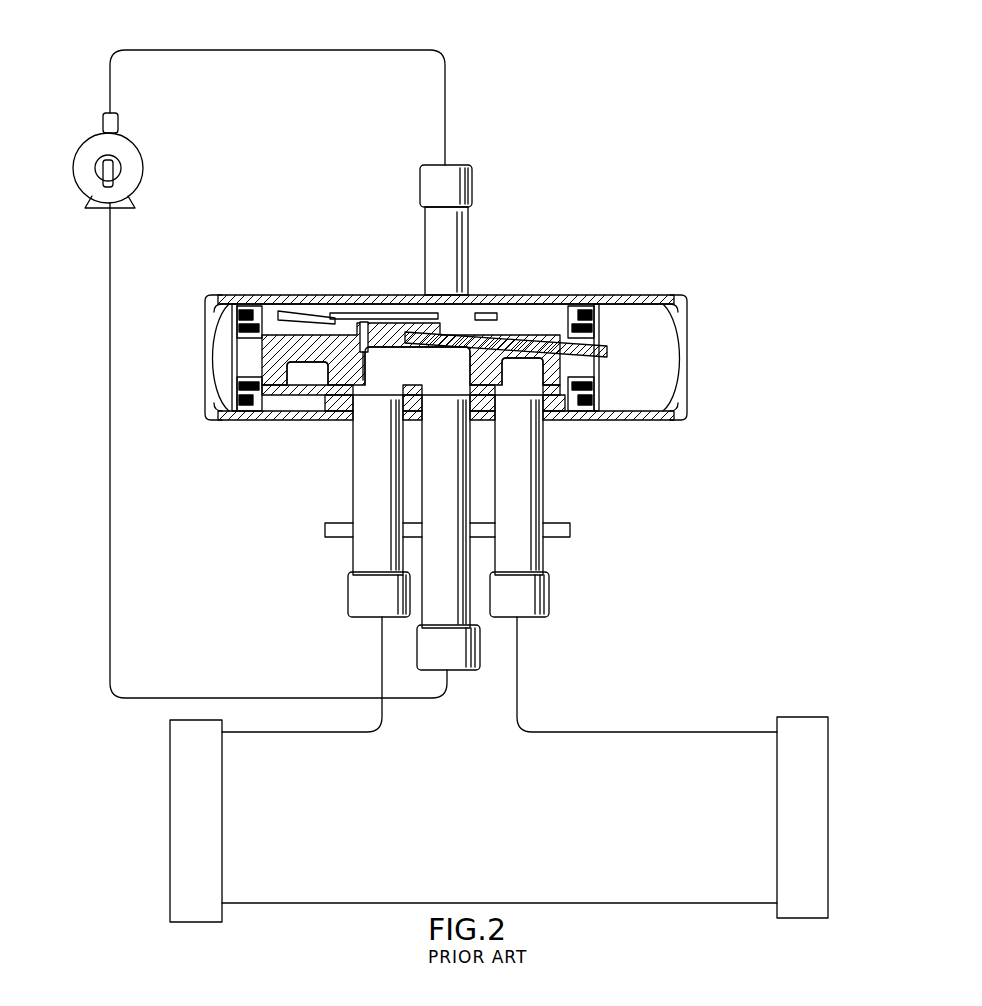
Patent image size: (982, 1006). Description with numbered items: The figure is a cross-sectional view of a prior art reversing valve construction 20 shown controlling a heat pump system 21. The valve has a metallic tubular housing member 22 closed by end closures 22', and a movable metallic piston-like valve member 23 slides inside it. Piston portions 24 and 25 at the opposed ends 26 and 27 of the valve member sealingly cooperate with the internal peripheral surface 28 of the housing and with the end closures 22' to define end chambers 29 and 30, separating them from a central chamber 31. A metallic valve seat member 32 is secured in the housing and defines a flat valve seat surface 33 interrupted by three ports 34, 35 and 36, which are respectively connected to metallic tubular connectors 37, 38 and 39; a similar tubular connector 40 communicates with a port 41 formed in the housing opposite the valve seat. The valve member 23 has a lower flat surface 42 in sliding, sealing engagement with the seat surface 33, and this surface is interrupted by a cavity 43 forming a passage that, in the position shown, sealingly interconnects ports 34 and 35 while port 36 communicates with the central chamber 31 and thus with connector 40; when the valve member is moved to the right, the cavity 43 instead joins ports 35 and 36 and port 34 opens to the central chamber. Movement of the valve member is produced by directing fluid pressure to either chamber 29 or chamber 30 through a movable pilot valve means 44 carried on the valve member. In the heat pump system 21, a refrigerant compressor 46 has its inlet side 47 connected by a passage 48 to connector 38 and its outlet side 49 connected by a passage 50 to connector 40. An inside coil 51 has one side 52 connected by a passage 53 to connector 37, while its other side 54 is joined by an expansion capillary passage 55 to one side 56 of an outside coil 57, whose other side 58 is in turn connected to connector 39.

The reversing valve construction 20 is at (690, 306).
The heat pump system 21 is at (559, 176).
The tubular housing member 22 is at (453, 385).
The end closures 22' is at (464, 357).
The valve member 23 is at (540, 330).
The piston portion 24 is at (242, 305).
The piston portion 25 is at (590, 320).
The end of valve member 26 is at (227, 356).
The end of valve member 27 is at (607, 349).
The internal peripheral surface 28 is at (625, 410).
The end chamber 29 is at (226, 388).
The end chamber 30 is at (648, 383).
The central chamber 31 is at (523, 316).
The valve seat member 32 is at (336, 392).
The valve seat surface 33 is at (417, 366).
The port 34 is at (352, 405).
The port 35 is at (462, 402).
The port 36 is at (512, 396).
The tubular connector 37 is at (350, 562).
The tubular connector 38 is at (478, 618).
The tubular connector 39 is at (545, 560).
The tubular connector 40 is at (425, 229).
The port 41 is at (445, 300).
The lower flat surface 42 is at (320, 398).
The cavity 43 is at (360, 380).
The pilot valve means 44 is at (400, 300).
The refrigerant compressor 46 is at (138, 150).
The inlet side 47 is at (100, 177).
The passage 48 is at (330, 696).
The outlet side 49 is at (103, 118).
The passage 50 is at (264, 50).
The inside coil 51 is at (168, 780).
The side of inside coil 52 is at (224, 732).
The passage 53 is at (330, 735).
The side of inside coil 54 is at (224, 902).
The expansion capillary passage 55 is at (638, 900).
The side of outside coil 56 is at (776, 902).
The outside coil 57 is at (828, 780).
The side of outside coil 58 is at (776, 728).